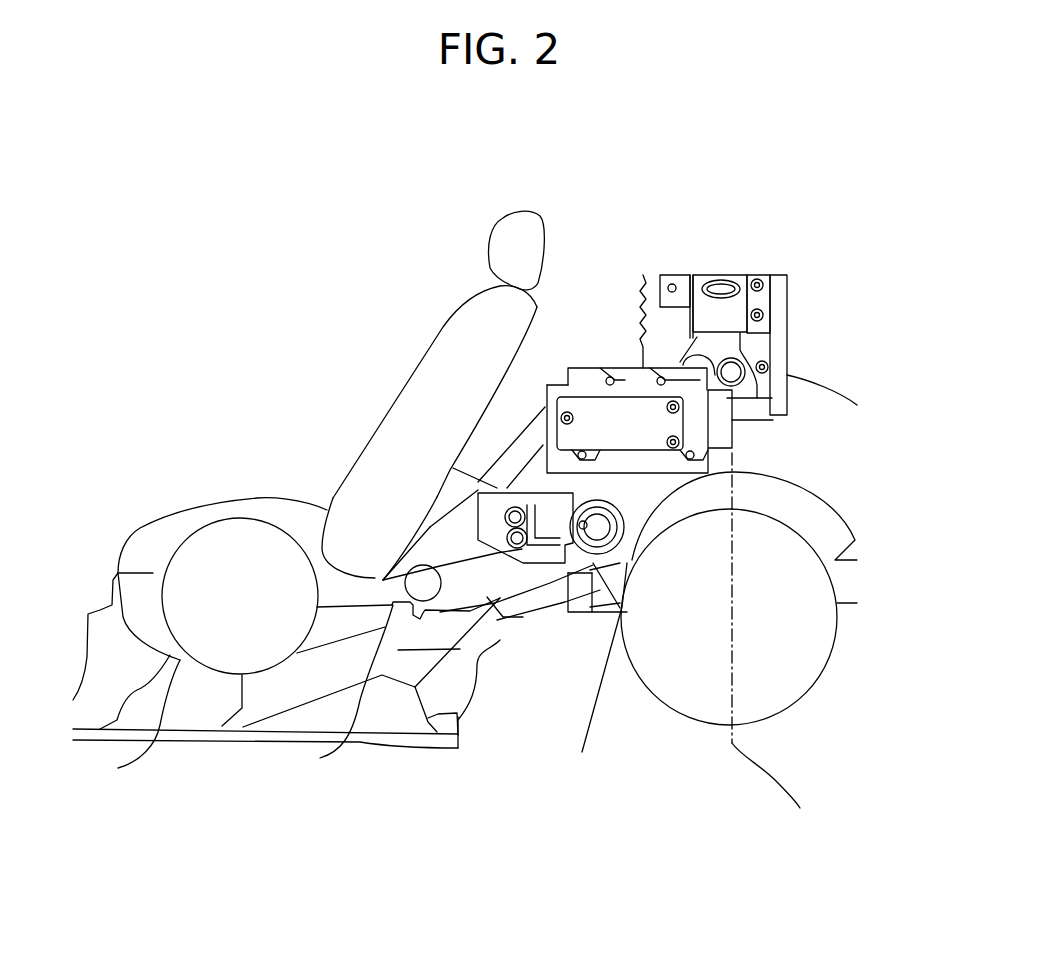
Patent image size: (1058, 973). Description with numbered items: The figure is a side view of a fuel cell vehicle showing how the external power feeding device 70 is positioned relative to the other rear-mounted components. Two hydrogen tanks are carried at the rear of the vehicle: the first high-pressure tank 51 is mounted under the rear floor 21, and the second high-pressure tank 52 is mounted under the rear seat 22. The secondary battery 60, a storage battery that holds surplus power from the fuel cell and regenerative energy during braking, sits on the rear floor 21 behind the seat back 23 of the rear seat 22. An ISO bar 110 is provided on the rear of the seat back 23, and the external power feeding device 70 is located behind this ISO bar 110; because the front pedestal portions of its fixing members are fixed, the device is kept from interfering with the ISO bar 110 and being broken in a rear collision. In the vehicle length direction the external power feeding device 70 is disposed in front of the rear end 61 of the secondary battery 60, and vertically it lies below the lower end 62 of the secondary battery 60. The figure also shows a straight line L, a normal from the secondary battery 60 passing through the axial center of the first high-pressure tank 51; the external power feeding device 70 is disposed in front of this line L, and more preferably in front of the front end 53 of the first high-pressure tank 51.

The rear floor 21 is at (855, 540).
The rear seat 22 is at (215, 502).
The seat back 23 is at (527, 353).
The first high-pressure tank 51 is at (788, 713).
The second high-pressure tank 52 is at (198, 651).
The front end 53 is at (596, 673).
The secondary battery 60 is at (697, 337).
The rear end 61 is at (710, 453).
The lower end 62 is at (630, 505).
The external power feeding device 70 is at (548, 598).
The ISO bar 110 is at (330, 694).
The straight line L is at (772, 647).